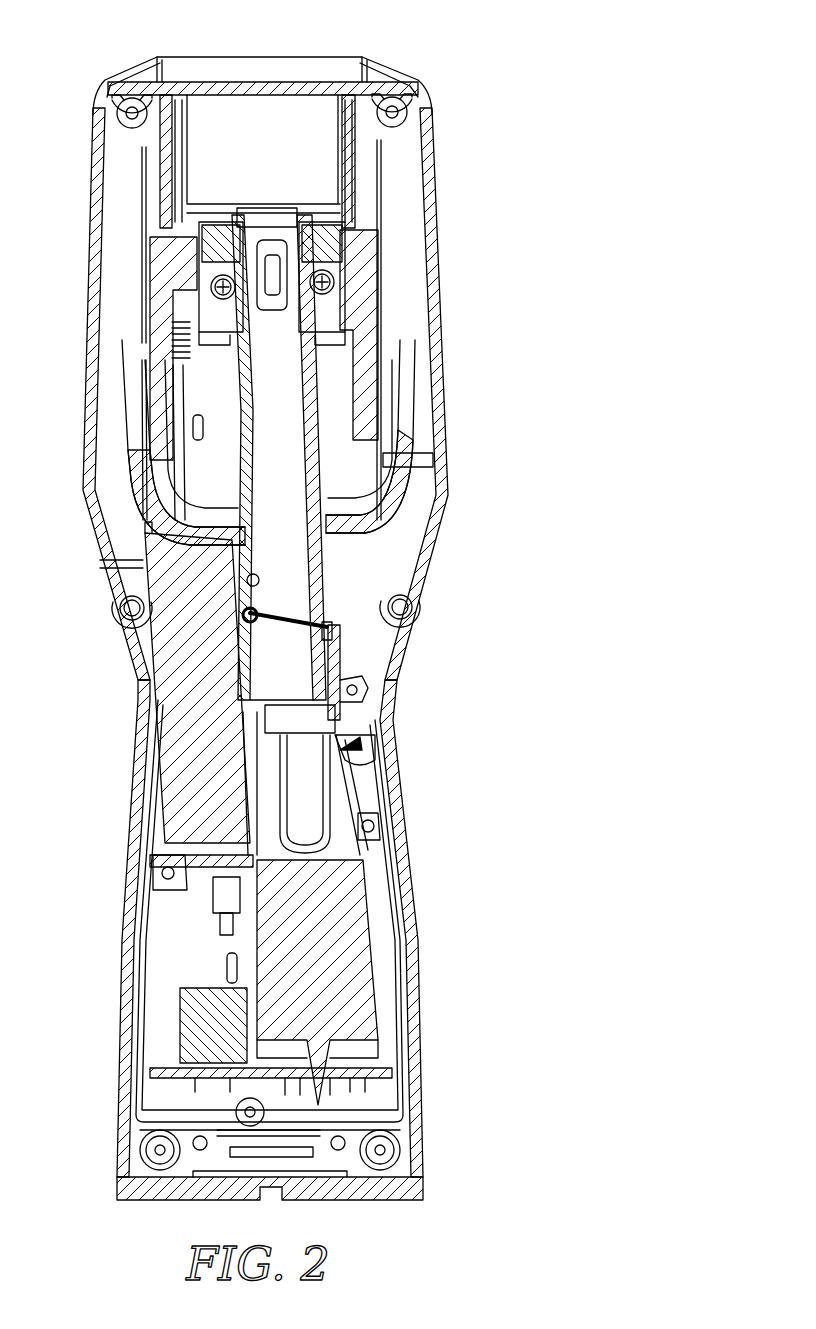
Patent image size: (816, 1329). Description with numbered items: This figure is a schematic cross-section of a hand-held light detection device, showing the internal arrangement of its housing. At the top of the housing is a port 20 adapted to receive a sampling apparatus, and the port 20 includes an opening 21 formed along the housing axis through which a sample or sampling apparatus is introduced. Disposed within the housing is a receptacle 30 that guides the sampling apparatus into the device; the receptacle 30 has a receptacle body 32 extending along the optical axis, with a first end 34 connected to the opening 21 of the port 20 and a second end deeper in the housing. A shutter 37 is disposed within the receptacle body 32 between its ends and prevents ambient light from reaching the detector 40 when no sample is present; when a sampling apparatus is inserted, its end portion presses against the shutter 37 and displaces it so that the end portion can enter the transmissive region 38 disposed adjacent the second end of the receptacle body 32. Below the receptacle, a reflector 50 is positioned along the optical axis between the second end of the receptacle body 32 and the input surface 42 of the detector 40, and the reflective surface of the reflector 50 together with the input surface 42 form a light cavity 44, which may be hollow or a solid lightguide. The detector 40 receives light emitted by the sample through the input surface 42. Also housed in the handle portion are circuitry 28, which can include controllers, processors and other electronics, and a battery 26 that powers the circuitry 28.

The port 20 is at (240, 120).
The opening 21 is at (255, 203).
The battery 26 is at (150, 703).
The circuitry 28 is at (180, 1035).
The receptacle 30 is at (348, 579).
The receptacle body 32 is at (333, 352).
The first end 34 is at (348, 208).
The shutter 37 is at (300, 592).
The transmissive region 38 is at (330, 782).
The detector 40 is at (375, 970).
The input surface 42 is at (376, 836).
The light cavity 44 is at (275, 823).
The reflector 50 is at (356, 745).